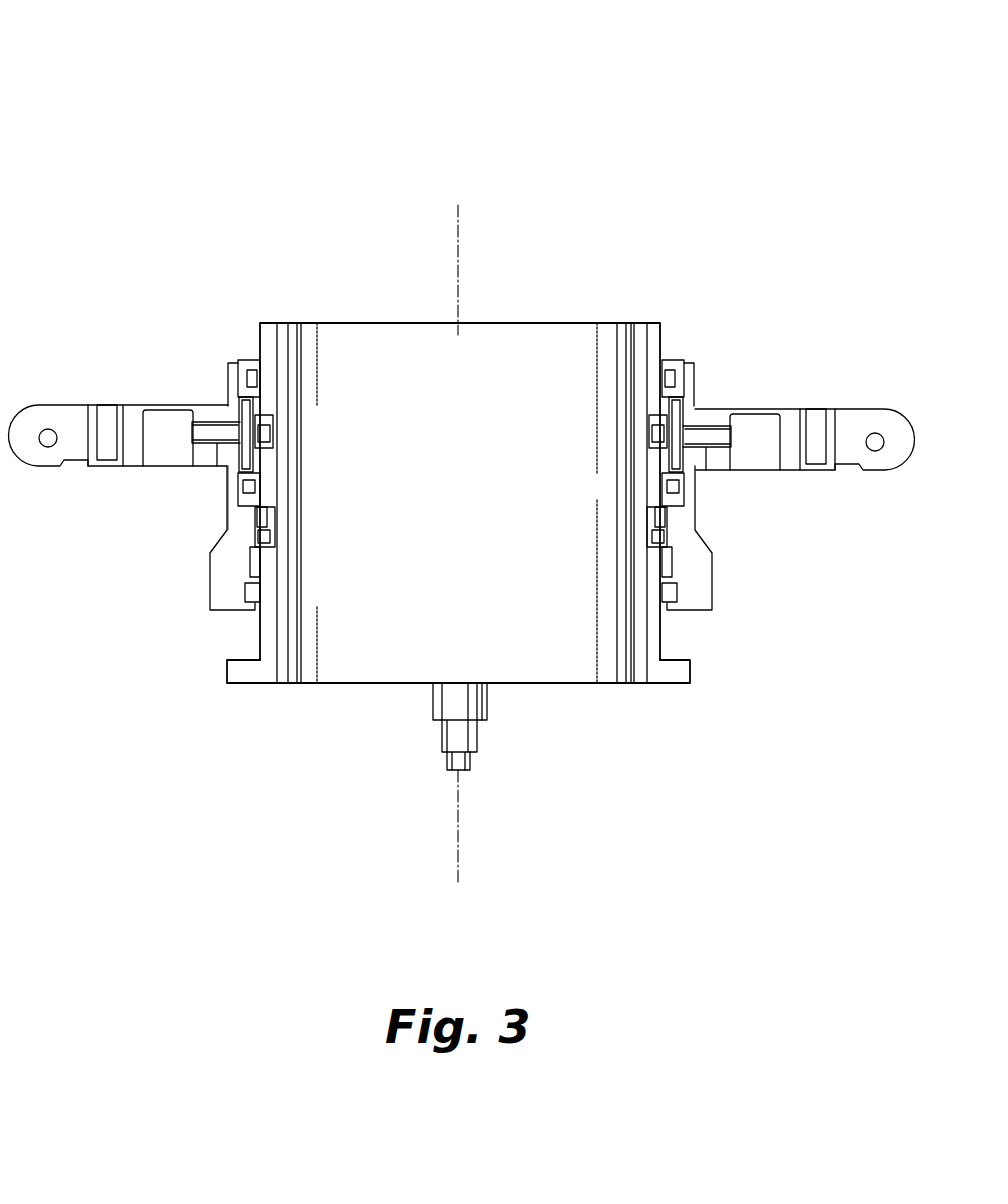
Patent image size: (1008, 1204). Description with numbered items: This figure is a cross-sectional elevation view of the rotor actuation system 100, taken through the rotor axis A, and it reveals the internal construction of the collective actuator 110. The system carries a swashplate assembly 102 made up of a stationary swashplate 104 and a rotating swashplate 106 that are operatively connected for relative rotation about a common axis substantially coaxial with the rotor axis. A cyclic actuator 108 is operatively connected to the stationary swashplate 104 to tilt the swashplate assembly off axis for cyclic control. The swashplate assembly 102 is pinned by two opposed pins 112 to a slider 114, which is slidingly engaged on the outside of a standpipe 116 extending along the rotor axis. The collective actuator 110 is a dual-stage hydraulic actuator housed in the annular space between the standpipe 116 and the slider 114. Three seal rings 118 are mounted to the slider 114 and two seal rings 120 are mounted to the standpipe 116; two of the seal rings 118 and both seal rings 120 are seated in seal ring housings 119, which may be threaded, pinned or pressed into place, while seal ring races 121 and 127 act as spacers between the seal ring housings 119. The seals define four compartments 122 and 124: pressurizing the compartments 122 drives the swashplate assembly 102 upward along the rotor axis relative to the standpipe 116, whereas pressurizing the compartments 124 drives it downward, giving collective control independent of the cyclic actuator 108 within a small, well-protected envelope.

The rotor actuation system 100 is at (170, 130).
The swashplate assembly 102 is at (462, 449).
The stationary swashplate 104 is at (122, 405).
The rotating swashplate 106 is at (40, 405).
The cyclic actuator 108 is at (443, 695).
The collective actuator 110 is at (241, 340).
The pins 112 is at (187, 432).
The slider 114 is at (230, 380).
The standpipe 116 is at (248, 680).
The seal rings 118 is at (268, 378).
The seal ring housings 119 is at (240, 492).
The seal rings 120 is at (272, 420).
The seal ring race 121 is at (268, 500).
The compartments 122 is at (268, 400).
The compartments 124 is at (278, 433).
The seal ring race 127 is at (265, 323).